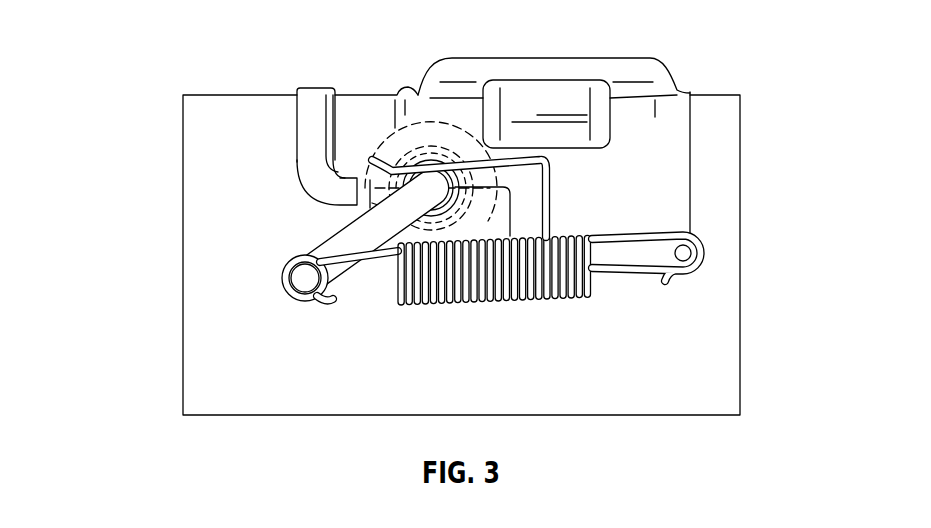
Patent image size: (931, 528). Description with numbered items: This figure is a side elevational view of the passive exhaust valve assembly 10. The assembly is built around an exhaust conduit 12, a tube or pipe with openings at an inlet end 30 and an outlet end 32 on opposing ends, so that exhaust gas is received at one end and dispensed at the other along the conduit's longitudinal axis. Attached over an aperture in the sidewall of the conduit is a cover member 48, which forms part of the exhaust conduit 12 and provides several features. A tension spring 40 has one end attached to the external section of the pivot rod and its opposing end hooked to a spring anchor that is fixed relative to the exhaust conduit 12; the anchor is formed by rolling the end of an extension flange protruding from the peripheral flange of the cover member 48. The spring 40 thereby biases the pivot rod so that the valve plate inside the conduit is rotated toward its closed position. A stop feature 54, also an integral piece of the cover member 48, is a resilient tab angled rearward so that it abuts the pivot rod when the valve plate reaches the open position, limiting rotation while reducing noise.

The passive exhaust valve assembly 10 is at (162, 75).
The exhaust conduit 12 is at (713, 93).
The inlet end 30 is at (757, 285).
The outlet end 32 is at (165, 247).
The tension spring 40 is at (538, 300).
The cover member 48 is at (663, 68).
The stop feature 54 is at (468, 160).